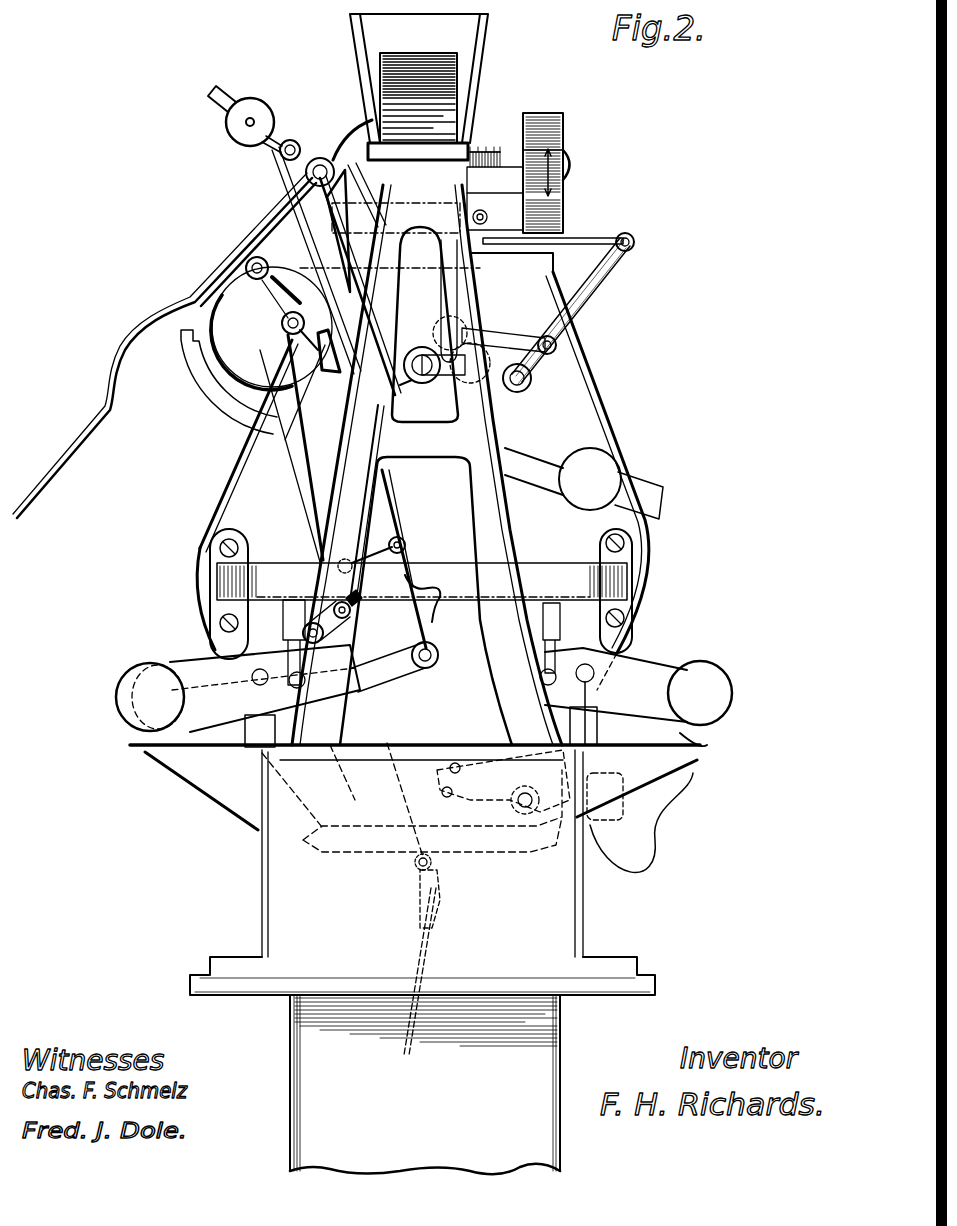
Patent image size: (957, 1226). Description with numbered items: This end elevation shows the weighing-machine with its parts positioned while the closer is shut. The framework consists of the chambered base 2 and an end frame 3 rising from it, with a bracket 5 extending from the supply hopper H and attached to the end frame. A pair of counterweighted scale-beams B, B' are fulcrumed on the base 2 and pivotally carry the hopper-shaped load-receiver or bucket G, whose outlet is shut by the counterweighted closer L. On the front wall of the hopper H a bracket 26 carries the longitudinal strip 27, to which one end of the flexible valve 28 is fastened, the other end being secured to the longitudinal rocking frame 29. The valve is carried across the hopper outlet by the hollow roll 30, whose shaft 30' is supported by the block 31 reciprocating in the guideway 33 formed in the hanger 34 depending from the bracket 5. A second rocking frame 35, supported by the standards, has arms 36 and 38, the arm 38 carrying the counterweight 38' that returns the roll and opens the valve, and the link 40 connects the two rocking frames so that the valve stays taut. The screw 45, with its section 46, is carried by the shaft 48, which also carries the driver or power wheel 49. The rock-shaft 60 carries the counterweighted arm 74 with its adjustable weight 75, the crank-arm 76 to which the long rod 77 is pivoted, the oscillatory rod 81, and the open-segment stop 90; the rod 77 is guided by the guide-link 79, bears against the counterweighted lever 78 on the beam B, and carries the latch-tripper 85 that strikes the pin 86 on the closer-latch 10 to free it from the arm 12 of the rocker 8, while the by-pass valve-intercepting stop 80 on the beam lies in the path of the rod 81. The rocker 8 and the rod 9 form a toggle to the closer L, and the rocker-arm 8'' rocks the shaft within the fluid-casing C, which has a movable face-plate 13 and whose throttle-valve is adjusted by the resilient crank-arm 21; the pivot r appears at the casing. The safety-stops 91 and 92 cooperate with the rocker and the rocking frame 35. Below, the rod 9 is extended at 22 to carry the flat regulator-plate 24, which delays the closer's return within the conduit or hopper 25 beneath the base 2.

The hopper H is at (480, 27).
The bracket 5 is at (445, 92).
The bracket 26 is at (495, 210).
The longitudinal strip 27 is at (548, 150).
The driver or power wheel 49 is at (552, 150).
The shaft 48 is at (569, 166).
The flexible valve 28 is at (566, 235).
The block 31 is at (512, 167).
The screw 45 is at (486, 148).
The screw section 46 is at (492, 150).
The hollow roll 30 is at (401, 217).
The roll-shaft 30' is at (393, 220).
The guideway 33 is at (365, 213).
The crank-arm 21 is at (348, 275).
The second valve-controlling rocking frame 35 is at (482, 254).
The rock-shaft 60 is at (321, 160).
The crank-arm 76 is at (291, 140).
The weight 75 is at (250, 104).
The counterweighted arm 74 is at (275, 147).
The hanger 34 is at (335, 221).
The stop 90 is at (268, 234).
The rocker-arm 8'' is at (226, 273).
The fluid-casing C is at (271, 328).
The pivot r is at (270, 338).
The movable face-plate 13 is at (283, 330).
The safety-stop 91 is at (218, 400).
The oscillatory rod 81 is at (105, 430).
The rocker 8 is at (277, 371).
The rod 9 is at (305, 482).
The safety-stop 92 is at (307, 420).
The arm 12 is at (353, 430).
The pin 86 is at (366, 450).
The end frame 3 is at (505, 545).
The arm 36 is at (446, 290).
The closer-latch 10 is at (400, 383).
The latch-tripper 85 is at (405, 390).
The link 40 is at (505, 335).
The longitudinal rocking frame 29 is at (580, 300).
The load-receiver or bucket G is at (583, 418).
The counterweight 38' is at (579, 468).
The arm 38 is at (644, 488).
The rod 77 is at (390, 526).
The guide-link 79 is at (378, 550).
The valve-intercepting stop 80 is at (348, 620).
The counterweighted lever 78 is at (400, 665).
The scale-beam B is at (238, 679).
The scale-beam B' is at (638, 688).
The chambered base 2 is at (575, 895).
The closer L is at (495, 852).
The extended portion of rod 22 is at (420, 900).
The regulator-plate 24 is at (416, 955).
The conduit or hopper 25 is at (425, 1084).